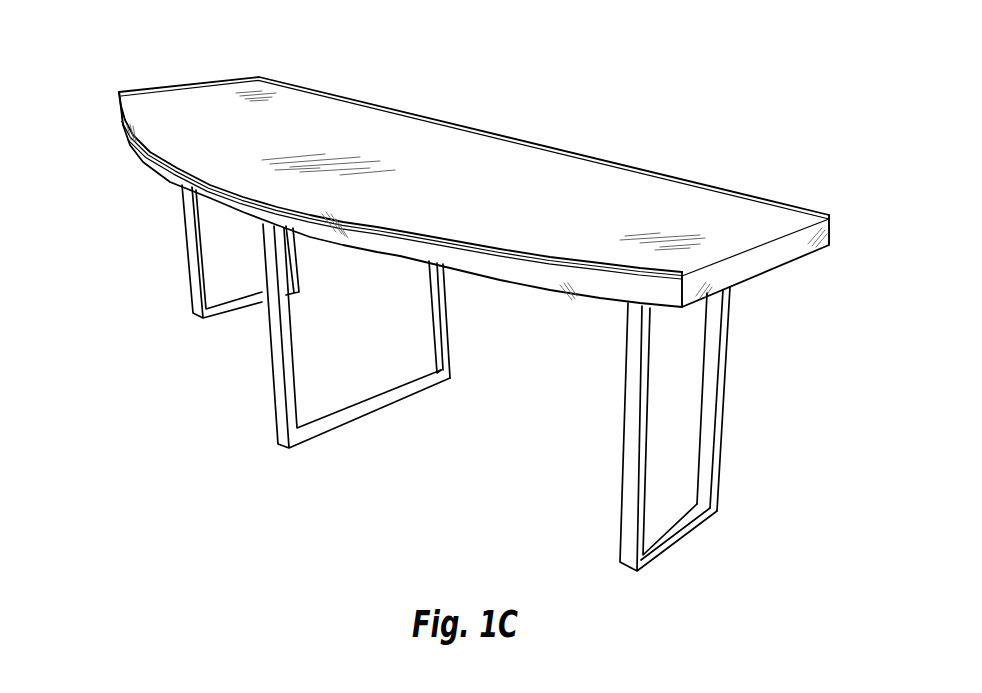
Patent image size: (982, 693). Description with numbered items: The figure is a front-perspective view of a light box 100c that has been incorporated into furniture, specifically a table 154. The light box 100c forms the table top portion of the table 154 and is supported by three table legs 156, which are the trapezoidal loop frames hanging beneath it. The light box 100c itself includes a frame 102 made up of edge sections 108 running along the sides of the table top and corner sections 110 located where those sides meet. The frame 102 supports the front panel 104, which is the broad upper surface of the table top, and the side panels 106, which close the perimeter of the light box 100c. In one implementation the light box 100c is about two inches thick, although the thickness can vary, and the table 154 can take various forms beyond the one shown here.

The light box 100c is at (482, 300).
The table 154 is at (482, 195).
The frame 102 is at (828, 215).
The front panel 104 is at (345, 150).
The side panels 106 is at (129, 132).
The edge sections 108 is at (665, 175).
The corner sections 110 is at (829, 233).
The table legs 156 is at (197, 283).